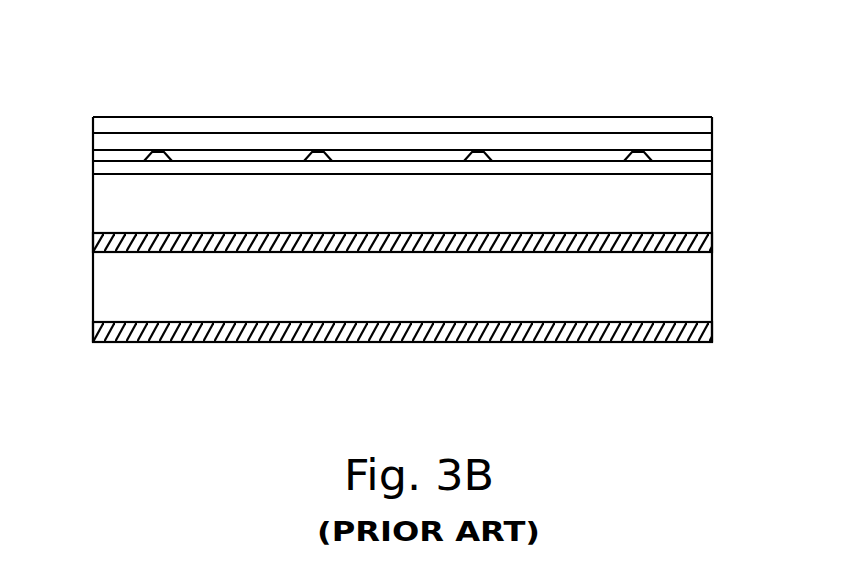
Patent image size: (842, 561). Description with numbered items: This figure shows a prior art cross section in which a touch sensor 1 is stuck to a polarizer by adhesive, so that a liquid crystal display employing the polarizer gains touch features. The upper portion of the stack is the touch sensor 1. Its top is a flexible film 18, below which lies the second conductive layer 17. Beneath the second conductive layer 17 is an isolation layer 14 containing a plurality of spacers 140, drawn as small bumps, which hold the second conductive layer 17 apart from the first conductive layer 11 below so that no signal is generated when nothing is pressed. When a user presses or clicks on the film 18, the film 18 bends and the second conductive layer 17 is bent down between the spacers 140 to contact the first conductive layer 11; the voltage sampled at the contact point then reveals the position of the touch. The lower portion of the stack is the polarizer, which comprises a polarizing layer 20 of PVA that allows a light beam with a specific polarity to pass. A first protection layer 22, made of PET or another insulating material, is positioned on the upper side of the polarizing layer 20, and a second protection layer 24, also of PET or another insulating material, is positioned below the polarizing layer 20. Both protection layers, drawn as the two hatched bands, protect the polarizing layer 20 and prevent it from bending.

The touch sensor 1 is at (393, 104).
The film 18 is at (595, 118).
The second conductive layer 17 is at (703, 142).
The isolation layer 14 is at (110, 152).
The spacers 140 is at (153, 152).
The first conductive layer 11 is at (697, 172).
The first protection layer 22 is at (93, 233).
The polarizing layer 20 is at (115, 287).
The second protection layer 24 is at (95, 337).